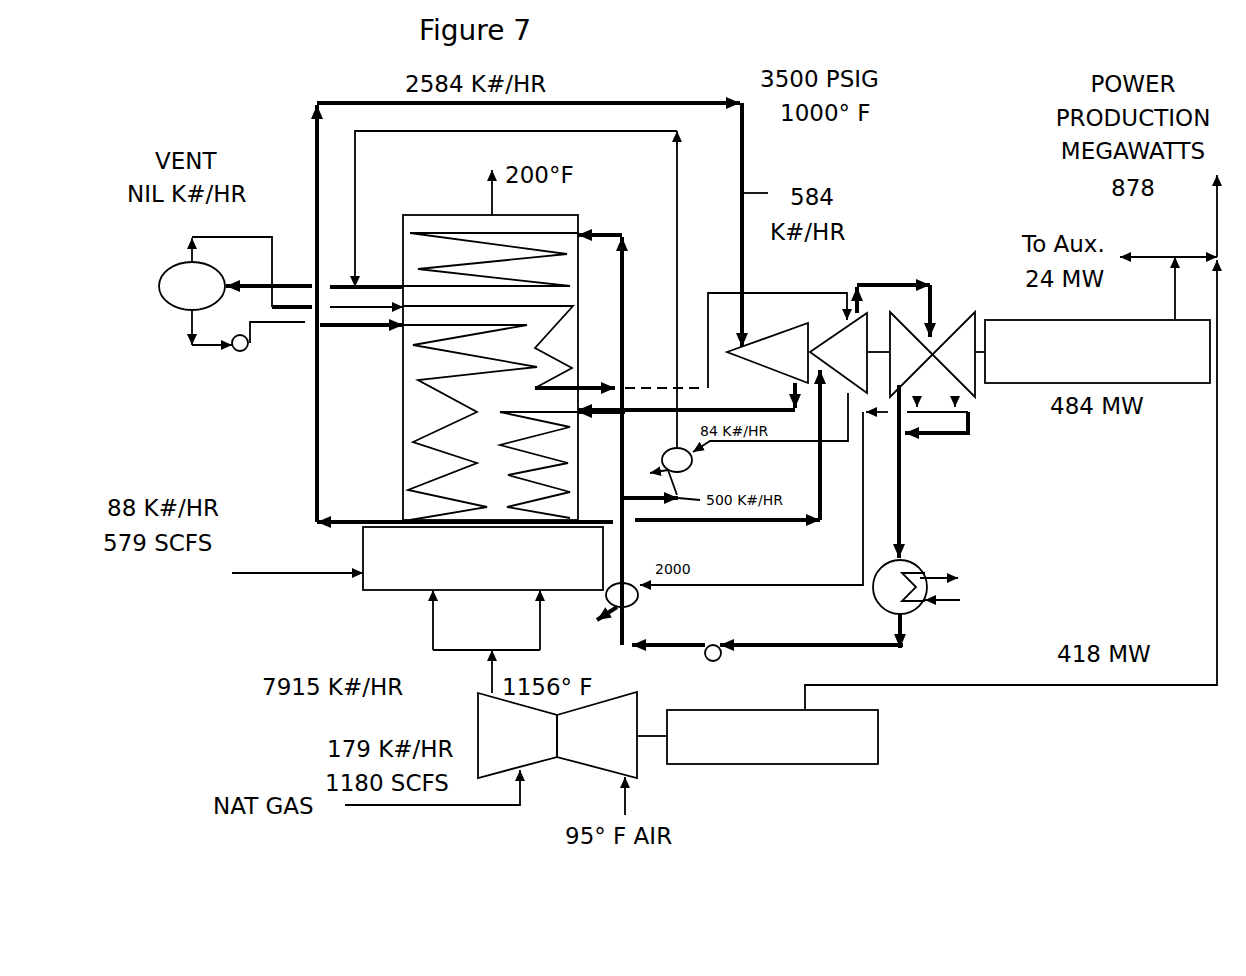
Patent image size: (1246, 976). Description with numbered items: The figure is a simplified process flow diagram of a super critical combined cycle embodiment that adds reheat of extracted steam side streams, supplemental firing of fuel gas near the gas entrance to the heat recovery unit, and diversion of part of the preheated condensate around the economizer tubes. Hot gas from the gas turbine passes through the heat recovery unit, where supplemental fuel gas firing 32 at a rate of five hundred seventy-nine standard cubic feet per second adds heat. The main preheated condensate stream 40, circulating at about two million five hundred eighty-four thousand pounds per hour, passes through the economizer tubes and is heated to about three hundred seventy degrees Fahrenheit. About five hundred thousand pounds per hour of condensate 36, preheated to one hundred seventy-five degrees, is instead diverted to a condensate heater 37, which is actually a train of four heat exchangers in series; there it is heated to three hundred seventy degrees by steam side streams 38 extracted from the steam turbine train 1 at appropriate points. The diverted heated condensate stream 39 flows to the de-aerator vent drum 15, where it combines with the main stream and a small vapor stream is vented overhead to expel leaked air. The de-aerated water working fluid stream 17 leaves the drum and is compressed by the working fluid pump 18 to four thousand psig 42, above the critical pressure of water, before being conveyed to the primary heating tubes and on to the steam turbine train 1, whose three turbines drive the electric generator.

The steam turbine train 1 is at (803, 308).
The de-aerator vent drum 15 is at (192, 286).
The de-aerated water working fluid stream 17 is at (203, 347).
The working fluid pump 18 is at (245, 352).
The supplemental fuel gas firing 32 is at (275, 573).
The condensate 36 is at (643, 497).
The condensate heater 37 is at (693, 467).
The steam side streams 38 is at (792, 441).
The diverted heated condensate stream 39 is at (516, 209).
The main preheated condensate stream 40 is at (382, 285).
The compressed condensate at 4000 psig 42 is at (285, 322).